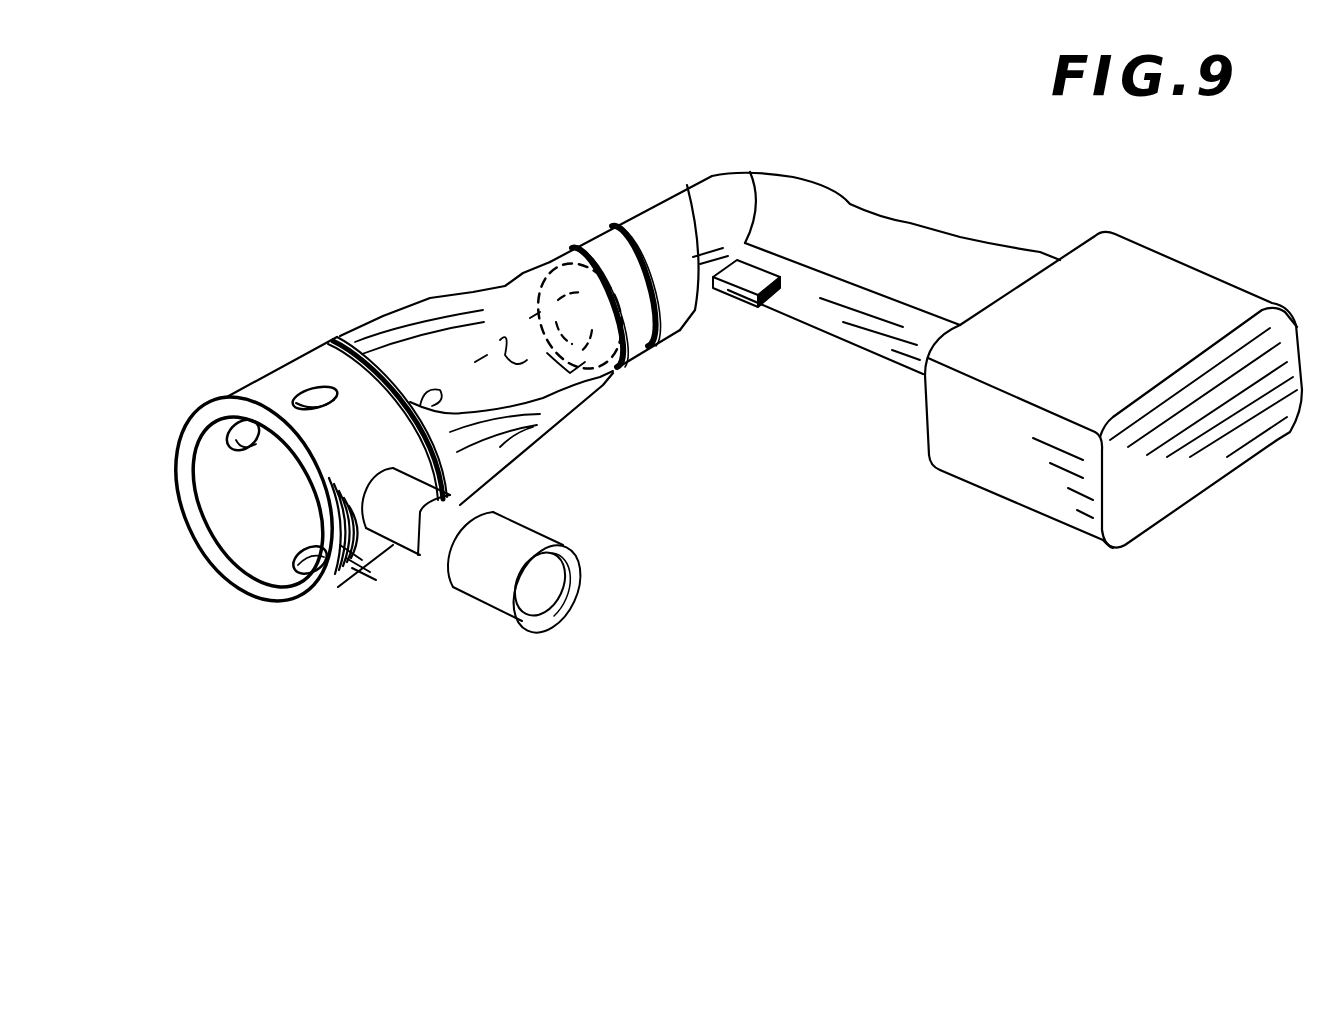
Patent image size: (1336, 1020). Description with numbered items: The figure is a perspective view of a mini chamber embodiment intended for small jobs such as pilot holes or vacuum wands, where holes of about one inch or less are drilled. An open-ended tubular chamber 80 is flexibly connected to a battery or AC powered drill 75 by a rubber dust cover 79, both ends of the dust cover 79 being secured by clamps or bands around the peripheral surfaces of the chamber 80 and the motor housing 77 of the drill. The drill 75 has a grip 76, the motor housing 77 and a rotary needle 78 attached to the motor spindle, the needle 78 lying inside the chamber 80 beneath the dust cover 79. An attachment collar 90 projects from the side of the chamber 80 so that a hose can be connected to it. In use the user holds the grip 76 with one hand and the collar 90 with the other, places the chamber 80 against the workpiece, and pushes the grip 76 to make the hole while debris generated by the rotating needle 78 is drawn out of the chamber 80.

The drill 75 is at (887, 550).
The grip 76 is at (870, 352).
The motor housing 77 is at (667, 195).
The rotary needle 78 is at (470, 363).
The rubber dust cover 79 is at (533, 442).
The tubular chamber 80 is at (227, 648).
The attachment collar 90 is at (493, 595).